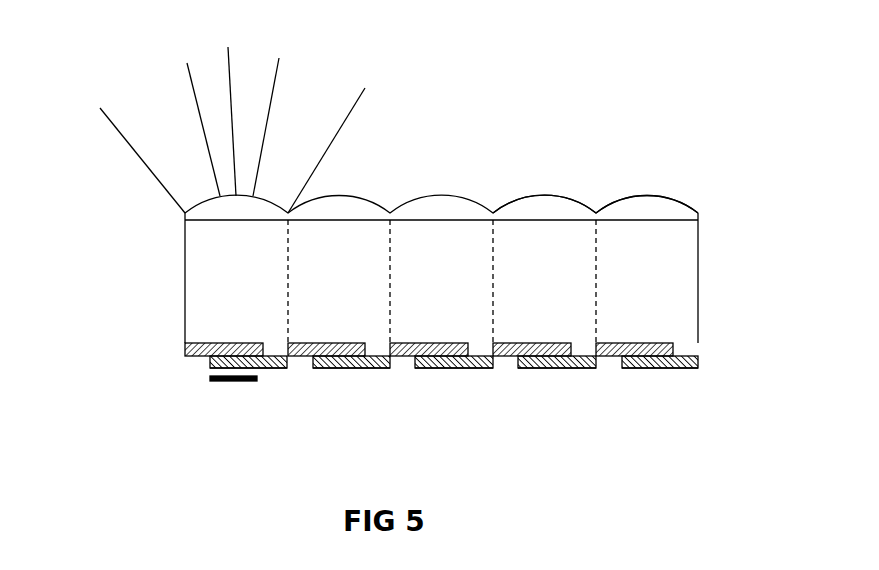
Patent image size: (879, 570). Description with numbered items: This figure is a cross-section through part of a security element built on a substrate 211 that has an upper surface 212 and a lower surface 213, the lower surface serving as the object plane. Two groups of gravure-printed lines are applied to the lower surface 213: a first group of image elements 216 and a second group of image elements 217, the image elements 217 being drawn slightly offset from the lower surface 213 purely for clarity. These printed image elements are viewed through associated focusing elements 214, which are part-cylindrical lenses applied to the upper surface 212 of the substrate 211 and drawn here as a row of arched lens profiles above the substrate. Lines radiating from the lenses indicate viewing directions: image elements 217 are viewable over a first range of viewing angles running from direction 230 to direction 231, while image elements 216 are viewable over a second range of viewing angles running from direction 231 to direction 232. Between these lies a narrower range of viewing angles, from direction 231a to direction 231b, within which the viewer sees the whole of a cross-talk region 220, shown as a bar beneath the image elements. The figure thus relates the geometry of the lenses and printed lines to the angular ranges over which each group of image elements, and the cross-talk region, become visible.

The substrate 211 is at (203, 283).
The upper surface 212 is at (208, 220).
The lower surface 213 is at (273, 346).
The focusing elements 214 is at (545, 196).
The image elements 216 is at (187, 357).
The image elements 217 is at (277, 368).
The cross-talk region 220 is at (227, 382).
The direction 230 is at (114, 133).
The direction 231 is at (232, 72).
The direction 231a is at (189, 80).
The direction 231b is at (275, 88).
The direction 232 is at (365, 88).